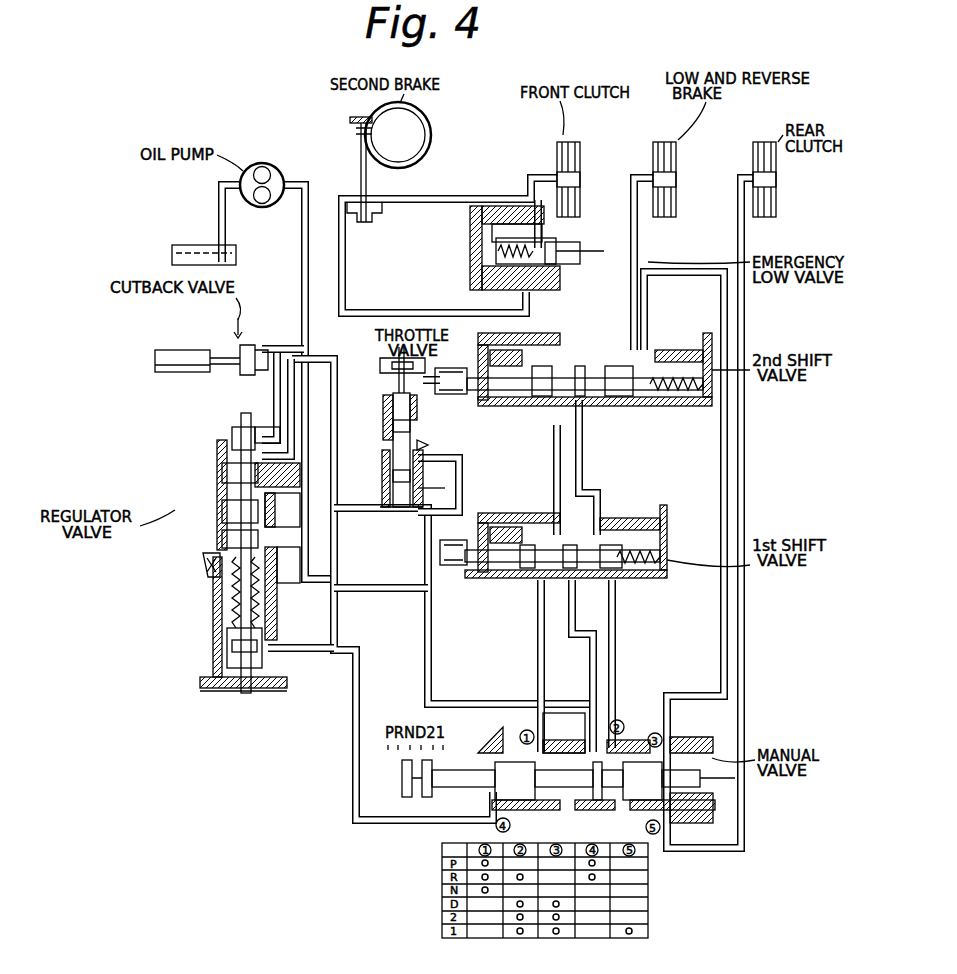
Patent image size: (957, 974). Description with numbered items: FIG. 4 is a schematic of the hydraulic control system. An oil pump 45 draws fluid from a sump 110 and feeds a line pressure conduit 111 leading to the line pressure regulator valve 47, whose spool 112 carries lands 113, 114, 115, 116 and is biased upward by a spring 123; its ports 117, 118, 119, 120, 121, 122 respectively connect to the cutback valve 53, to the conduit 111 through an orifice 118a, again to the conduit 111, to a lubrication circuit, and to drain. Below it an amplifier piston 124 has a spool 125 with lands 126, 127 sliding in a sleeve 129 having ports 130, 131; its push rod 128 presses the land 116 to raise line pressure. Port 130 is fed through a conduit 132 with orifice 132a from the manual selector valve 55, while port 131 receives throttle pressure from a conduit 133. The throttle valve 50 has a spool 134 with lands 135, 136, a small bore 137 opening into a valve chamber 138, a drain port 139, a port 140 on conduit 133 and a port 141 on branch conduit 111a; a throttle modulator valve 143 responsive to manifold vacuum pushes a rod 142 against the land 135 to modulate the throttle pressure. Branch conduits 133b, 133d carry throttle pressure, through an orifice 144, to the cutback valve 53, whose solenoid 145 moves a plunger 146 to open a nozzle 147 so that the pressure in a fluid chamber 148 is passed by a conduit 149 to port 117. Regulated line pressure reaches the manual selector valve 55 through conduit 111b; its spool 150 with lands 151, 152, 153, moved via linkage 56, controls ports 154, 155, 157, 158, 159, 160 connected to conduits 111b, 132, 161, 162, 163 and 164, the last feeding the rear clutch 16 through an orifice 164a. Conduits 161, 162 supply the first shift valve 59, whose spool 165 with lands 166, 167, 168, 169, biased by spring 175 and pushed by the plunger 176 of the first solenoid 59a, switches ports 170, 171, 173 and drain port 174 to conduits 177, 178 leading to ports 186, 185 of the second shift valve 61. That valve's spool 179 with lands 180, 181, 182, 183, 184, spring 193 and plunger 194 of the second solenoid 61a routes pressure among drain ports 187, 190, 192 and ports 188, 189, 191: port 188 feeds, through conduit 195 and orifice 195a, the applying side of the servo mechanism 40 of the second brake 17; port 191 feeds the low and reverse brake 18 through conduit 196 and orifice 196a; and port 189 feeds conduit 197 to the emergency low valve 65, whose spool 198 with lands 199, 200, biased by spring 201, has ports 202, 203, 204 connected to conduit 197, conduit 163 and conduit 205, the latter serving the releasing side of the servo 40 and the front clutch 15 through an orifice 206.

The front clutch 15 is at (587, 126).
The rear clutch 16 is at (765, 142).
The second brake 17 is at (461, 119).
The low and reverse brake 18 is at (666, 142).
The servo mechanism 40 is at (370, 226).
The oil pump 45 is at (272, 172).
The line pressure regulator valve 47 is at (210, 488).
The throttle valve 50 is at (436, 407).
The cutback valve 53 is at (248, 325).
The manual selector valve 55 is at (620, 705).
The mechanical linkage 56 is at (490, 750).
The first shift valve 59 is at (625, 512).
The first solenoid 59a is at (480, 518).
The second shift valve 61 is at (684, 330).
The second solenoid 61a is at (443, 368).
The emergency low valve 65 is at (590, 248).
The sump 110 is at (236, 256).
The line pressure conduit 111 is at (303, 288).
The branch conduit 111a is at (420, 585).
The conduit 111b is at (424, 643).
The valve spool 112 is at (222, 505).
The land 113 is at (230, 440).
The land 114 is at (222, 465).
The land 115 is at (222, 540).
The land 116 is at (270, 583).
The port 117 is at (255, 432).
The port 118 is at (268, 440).
The orifice 118a is at (303, 468).
The port 119 is at (280, 515).
The port 120 is at (268, 555).
The port 121 is at (222, 530).
The drain port 122 is at (203, 560).
The spring 123 is at (270, 598).
The amplifier piston 124 is at (208, 651).
The spool 125 is at (227, 668).
The land 126 is at (227, 640).
The land 127 is at (236, 690).
The push rod 128 is at (230, 598).
The sleeve 129 is at (267, 618).
The port 130 is at (290, 650).
The port 131 is at (296, 690).
The conduit 132 is at (418, 825).
The orifice 132a is at (362, 690).
The conduit 133 is at (345, 512).
The branch conduit 133b is at (360, 366).
The throttle pressure conduit 133d is at (338, 565).
The valve spool 134 is at (392, 478).
The land 135 is at (392, 440).
The land 136 is at (392, 492).
The small bore 137 is at (392, 465).
The valve chamber 138 is at (397, 508).
The drain port 139 is at (430, 442).
The port 140 is at (462, 471).
The port 141 is at (460, 493).
The push rod 142 is at (398, 385).
The throttle modulator valve 143 is at (385, 358).
The orifice 144 is at (326, 440).
The solenoid 145 is at (185, 350).
The plunger 146 is at (222, 372).
The nozzle 147 is at (250, 345).
The fluid chamber 148 is at (280, 348).
The conduit 149 is at (277, 383).
The valve spool 150 is at (573, 800).
The land 151 is at (515, 800).
The land 152 is at (605, 800).
The land 153 is at (648, 835).
The port 154 is at (580, 752).
The port 155 is at (488, 808).
The port 157 is at (510, 745).
The port 158 is at (612, 745).
The port 159 is at (676, 745).
The port 160 is at (668, 823).
The conduit 161 is at (537, 663).
The conduit 162 is at (595, 660).
The conduit 163 is at (720, 655).
The conduit 164 is at (742, 610).
The orifice 164a is at (742, 226).
The valve spool 165 is at (560, 580).
The land 166 is at (500, 580).
The land 167 is at (528, 580).
The land 168 is at (585, 580).
The land 169 is at (600, 580).
The port 170 is at (548, 580).
The port 171 is at (600, 588).
The port 173 is at (600, 518).
The drain port 174 is at (667, 508).
The spring 175 is at (667, 540).
The plunger 176 is at (470, 565).
The conduit 177 is at (553, 468).
The conduit 178 is at (582, 467).
The valve spool 179 is at (592, 406).
The land 180 is at (512, 406).
The land 181 is at (530, 406).
The land 182 is at (548, 400).
The land 183 is at (618, 408).
The land 184 is at (670, 408).
The port 185 is at (565, 406).
The port 186 is at (640, 420).
The drain port 187 is at (500, 345).
The port 188 is at (545, 345).
The port 189 is at (575, 345).
The drain port 190 is at (600, 350).
The port 191 is at (640, 330).
The drain port 192 is at (712, 338).
The spring 193 is at (680, 350).
The plunger 194 is at (488, 395).
The conduit 195 is at (430, 310).
The orifice 195a is at (346, 286).
The conduit 196 is at (640, 266).
The orifice 196a is at (638, 228).
The conduit 197 is at (566, 295).
The valve spool 198 is at (545, 252).
The land 199 is at (476, 280).
The land 200 is at (500, 290).
The spring 201 is at (470, 246).
The port 202 is at (535, 290).
The port 203 is at (570, 264).
The port 204 is at (480, 212).
The conduit 205 is at (520, 200).
The orifice 206 is at (537, 178).